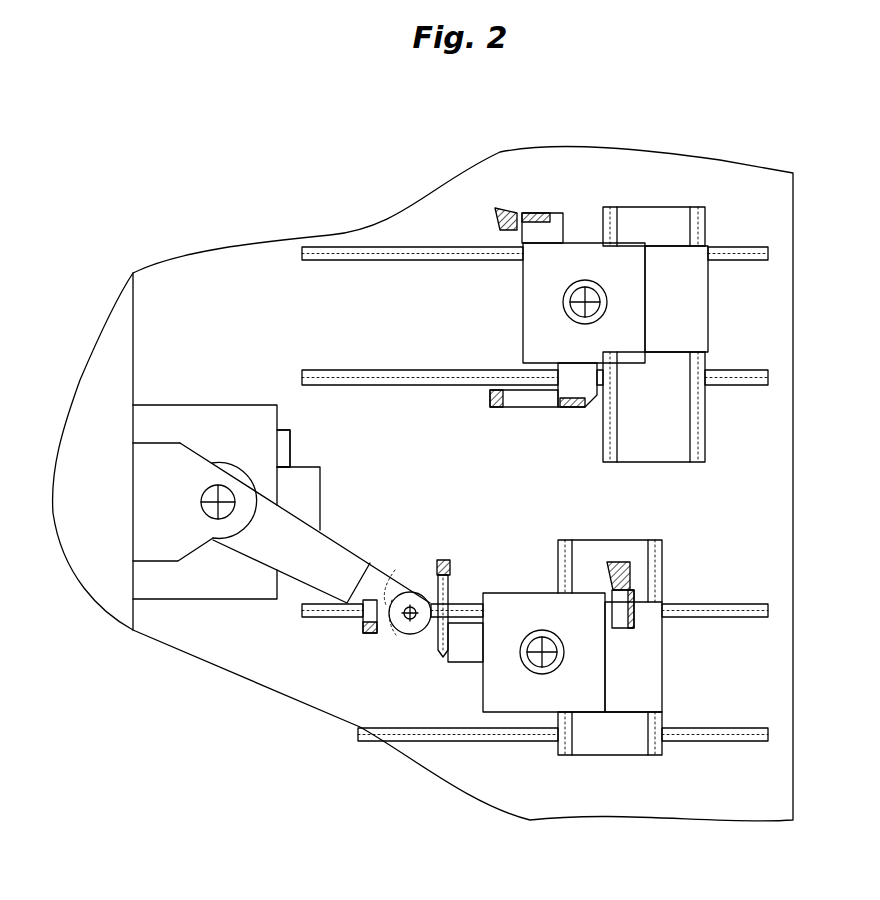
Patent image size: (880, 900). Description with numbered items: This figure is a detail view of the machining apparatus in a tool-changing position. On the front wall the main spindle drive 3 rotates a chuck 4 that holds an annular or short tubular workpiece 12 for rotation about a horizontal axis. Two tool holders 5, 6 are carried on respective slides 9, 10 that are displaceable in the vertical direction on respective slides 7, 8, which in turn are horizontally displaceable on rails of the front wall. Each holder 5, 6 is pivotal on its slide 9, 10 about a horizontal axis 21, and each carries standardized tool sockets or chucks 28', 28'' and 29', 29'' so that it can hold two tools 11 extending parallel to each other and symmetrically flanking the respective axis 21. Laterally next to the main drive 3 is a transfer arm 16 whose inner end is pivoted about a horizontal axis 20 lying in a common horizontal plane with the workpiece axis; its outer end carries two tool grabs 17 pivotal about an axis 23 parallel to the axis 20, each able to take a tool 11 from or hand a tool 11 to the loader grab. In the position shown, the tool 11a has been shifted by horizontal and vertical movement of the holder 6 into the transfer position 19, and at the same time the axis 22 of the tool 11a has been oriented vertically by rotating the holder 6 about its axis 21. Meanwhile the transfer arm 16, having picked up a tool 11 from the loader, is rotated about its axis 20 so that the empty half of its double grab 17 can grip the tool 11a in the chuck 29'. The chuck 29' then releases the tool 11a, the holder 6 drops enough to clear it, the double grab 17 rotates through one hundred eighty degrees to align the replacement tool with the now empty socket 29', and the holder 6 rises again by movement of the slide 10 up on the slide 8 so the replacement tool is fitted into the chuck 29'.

The main spindle drive 3 is at (195, 405).
The chuck 4 is at (290, 440).
The tool holder 5 is at (540, 300).
The tool holder 6 is at (512, 697).
The slide 7 is at (680, 432).
The slide 8 is at (580, 548).
The slide 9 is at (685, 292).
The slide 10 is at (638, 660).
The tool 11 is at (499, 220).
The tool 11a is at (453, 572).
The workpiece 12 is at (312, 484).
The transfer arm 16 is at (260, 542).
The tool grab 17 is at (455, 598).
The transfer position 19 is at (441, 537).
The axis 20 is at (212, 492).
The axis 21 is at (587, 290).
The axis 22 is at (444, 662).
The axis 23 is at (404, 632).
The tool socket 28' is at (555, 207).
The tool socket 28'' is at (558, 411).
The tool socket 29' is at (490, 632).
The tool socket 29'' is at (671, 621).